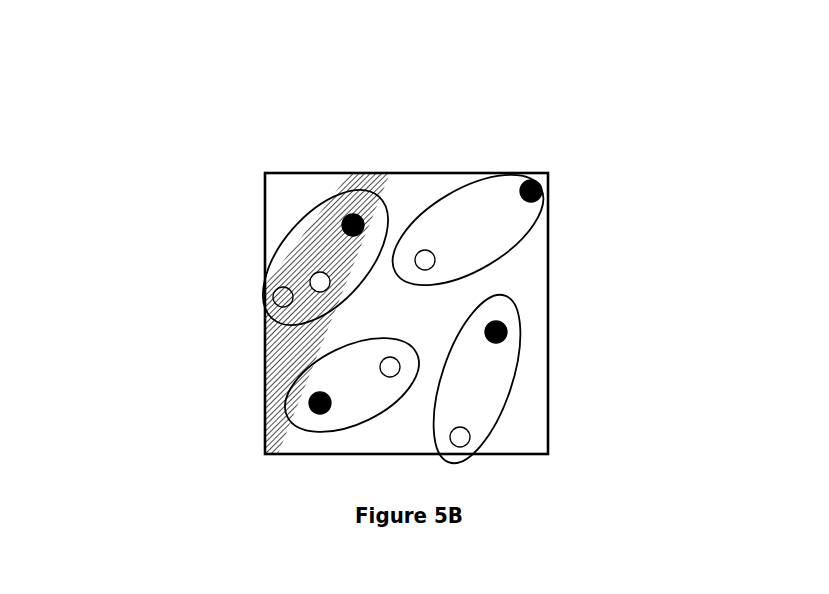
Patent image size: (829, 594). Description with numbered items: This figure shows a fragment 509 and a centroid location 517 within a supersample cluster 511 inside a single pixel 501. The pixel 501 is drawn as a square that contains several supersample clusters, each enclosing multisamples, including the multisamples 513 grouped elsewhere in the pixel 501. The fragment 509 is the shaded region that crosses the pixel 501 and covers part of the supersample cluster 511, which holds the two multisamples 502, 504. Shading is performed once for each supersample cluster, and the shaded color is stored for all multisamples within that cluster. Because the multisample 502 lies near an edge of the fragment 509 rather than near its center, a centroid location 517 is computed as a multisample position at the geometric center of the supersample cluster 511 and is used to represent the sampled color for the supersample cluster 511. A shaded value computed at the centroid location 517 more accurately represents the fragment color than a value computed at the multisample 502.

The pixel 501 is at (447, 172).
The multisample 502 is at (347, 217).
The multisample 504 is at (272, 302).
The fragment 509 is at (353, 192).
The supersample cluster 511 is at (327, 205).
The multisamples 513 is at (463, 427).
The centroid location 517 is at (310, 280).